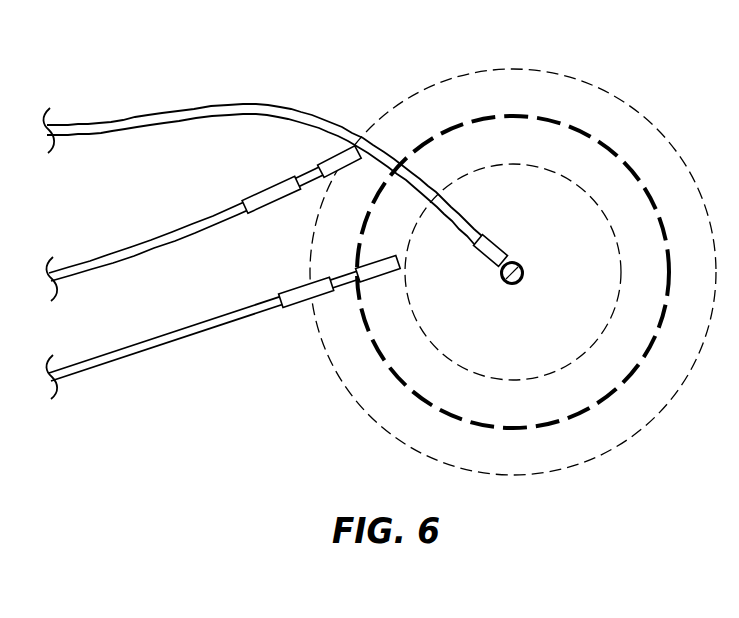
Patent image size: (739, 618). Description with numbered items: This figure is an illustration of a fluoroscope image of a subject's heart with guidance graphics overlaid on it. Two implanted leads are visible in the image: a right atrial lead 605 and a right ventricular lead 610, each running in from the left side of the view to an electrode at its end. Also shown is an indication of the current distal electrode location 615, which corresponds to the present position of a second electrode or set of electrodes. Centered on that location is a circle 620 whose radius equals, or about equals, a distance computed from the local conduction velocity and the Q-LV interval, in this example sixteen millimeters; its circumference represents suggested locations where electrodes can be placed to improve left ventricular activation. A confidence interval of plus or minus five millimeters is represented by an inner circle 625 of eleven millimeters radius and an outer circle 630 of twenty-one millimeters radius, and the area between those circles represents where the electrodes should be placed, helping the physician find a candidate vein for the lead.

The right atrial lead 605 is at (152, 244).
The right ventricular lead 610 is at (165, 337).
The current distal electrode location 615 is at (521, 265).
The circle 620 is at (530, 118).
The circle 625 is at (518, 165).
The circle 630 is at (548, 71).